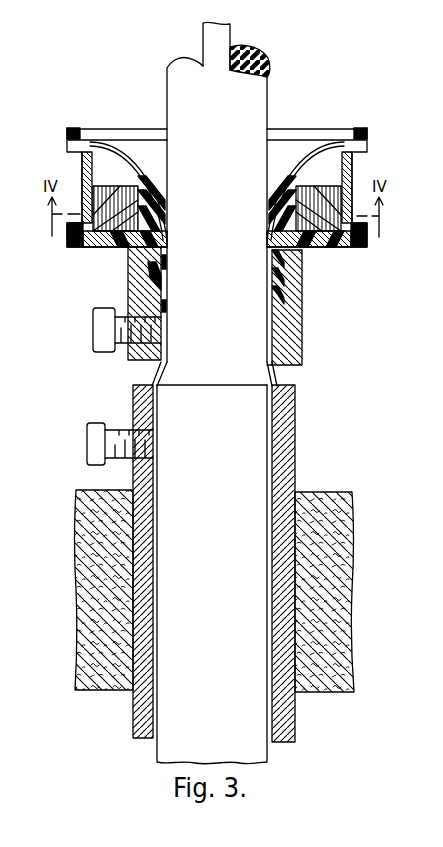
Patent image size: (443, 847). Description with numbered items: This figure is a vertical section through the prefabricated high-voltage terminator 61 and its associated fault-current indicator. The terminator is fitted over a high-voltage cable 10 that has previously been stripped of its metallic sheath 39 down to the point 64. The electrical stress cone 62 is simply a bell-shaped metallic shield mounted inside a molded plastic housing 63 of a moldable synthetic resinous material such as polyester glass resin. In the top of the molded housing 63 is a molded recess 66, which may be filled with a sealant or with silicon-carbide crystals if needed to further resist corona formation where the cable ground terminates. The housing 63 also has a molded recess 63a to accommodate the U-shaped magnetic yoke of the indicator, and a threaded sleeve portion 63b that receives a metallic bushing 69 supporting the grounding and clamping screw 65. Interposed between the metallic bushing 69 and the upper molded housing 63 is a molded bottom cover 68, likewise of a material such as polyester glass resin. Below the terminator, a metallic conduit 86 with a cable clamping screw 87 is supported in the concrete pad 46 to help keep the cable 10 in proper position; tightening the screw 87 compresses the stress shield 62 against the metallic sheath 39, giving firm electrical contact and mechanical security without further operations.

The high-voltage cable 10 is at (229, 33).
The metallic sheath 39 is at (264, 417).
The concrete pad 46 is at (320, 694).
The prefabricated high-voltage terminator 61 is at (105, 91).
The electrical stress cone 62 is at (317, 146).
The molded plastic housing 63 is at (352, 183).
The molded recess 63a is at (299, 187).
The sleeve portion 63b is at (389, 262).
The point 64 is at (217, 385).
The grounding and clamping screw 65 is at (93, 329).
The molded recess 66 is at (122, 138).
The molded bottom cover 68 is at (70, 234).
The metallic bushing 69 is at (298, 322).
The metallic conduit 86 is at (295, 467).
The cable clamping screw 87 is at (87, 444).